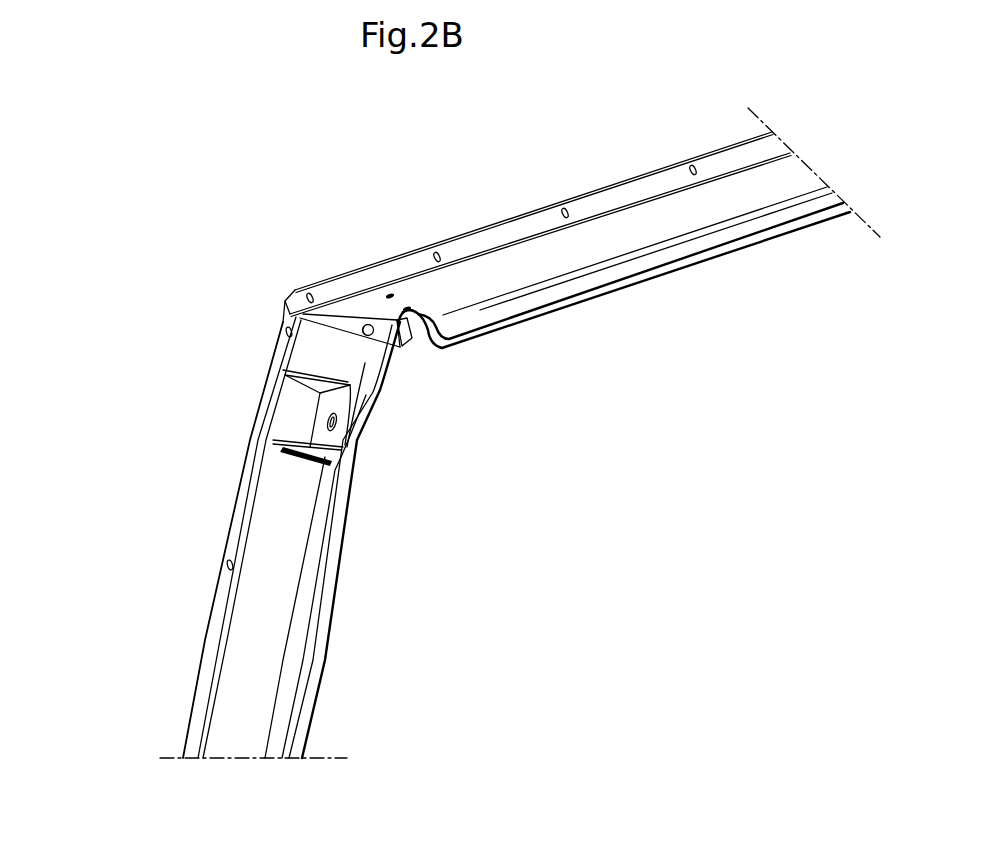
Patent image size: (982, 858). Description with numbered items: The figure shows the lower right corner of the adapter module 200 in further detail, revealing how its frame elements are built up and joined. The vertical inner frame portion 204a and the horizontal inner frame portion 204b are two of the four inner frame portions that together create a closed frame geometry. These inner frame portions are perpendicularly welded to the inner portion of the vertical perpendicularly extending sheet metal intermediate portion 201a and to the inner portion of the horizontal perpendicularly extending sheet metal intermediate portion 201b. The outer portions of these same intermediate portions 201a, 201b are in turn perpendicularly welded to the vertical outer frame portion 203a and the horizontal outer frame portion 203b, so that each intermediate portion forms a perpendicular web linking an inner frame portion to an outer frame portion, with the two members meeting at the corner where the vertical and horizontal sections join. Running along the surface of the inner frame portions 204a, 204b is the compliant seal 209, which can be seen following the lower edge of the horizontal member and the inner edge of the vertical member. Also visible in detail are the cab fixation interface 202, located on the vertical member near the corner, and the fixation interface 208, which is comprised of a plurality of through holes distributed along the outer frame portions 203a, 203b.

The adapter module 200 is at (178, 255).
The vertical perpendicularly extending sheet metal intermediate portion 201a is at (237, 727).
The horizontal perpendicularly extending sheet metal intermediate portion 201b is at (615, 233).
The cab fixation interface 202 is at (352, 418).
The vertical outer frame portion 203a is at (218, 628).
The horizontal outer frame portion 203b is at (717, 158).
The vertical inner frame portion 204a is at (306, 611).
The horizontal inner frame portion 204b is at (736, 230).
The fixation interface 208 is at (693, 168).
The compliant seal 209 is at (472, 343).